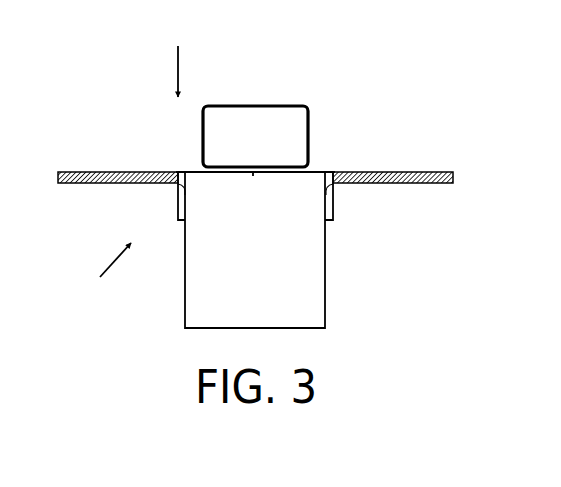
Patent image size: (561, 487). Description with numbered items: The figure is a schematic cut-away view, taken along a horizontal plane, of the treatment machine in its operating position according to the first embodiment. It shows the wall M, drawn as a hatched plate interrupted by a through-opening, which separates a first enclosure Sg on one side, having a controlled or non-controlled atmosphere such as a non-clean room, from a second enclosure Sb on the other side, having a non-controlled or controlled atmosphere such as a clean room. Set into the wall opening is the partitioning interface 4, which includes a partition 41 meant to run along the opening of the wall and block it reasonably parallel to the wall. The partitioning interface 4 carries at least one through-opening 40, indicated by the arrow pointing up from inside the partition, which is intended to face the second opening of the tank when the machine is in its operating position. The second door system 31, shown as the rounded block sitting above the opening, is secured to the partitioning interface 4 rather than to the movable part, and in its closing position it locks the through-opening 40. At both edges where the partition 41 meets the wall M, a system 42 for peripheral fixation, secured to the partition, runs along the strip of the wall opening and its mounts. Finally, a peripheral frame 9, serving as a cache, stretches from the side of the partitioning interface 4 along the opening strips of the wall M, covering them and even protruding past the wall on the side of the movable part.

The partitioning interface 4 is at (308, 250).
The partition 41 is at (292, 172).
The peripheral frame 9 is at (177, 211).
The wall M is at (399, 176).
The second door system 31 is at (274, 119).
The peripheral fixation system 42 is at (173, 169).
The through-opening 40 is at (253, 176).
The second enclosure Sb is at (180, 58).
The first enclosure Sg is at (103, 274).